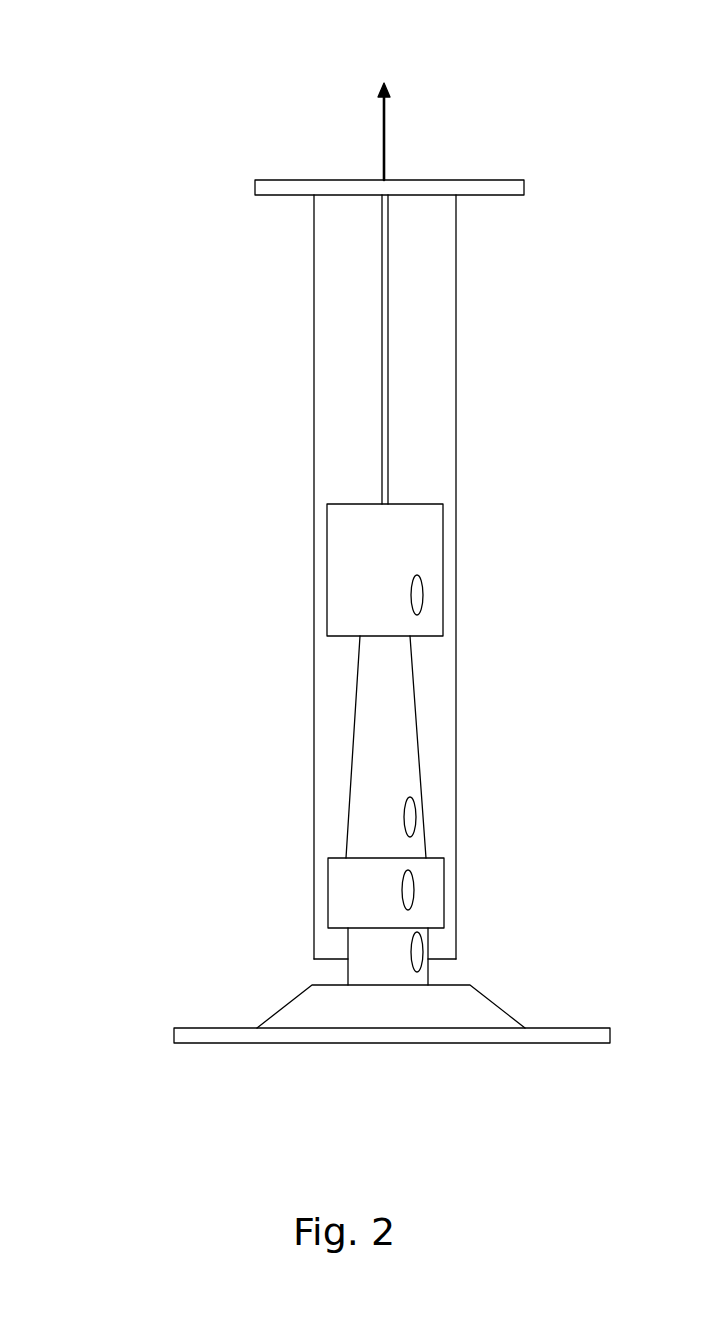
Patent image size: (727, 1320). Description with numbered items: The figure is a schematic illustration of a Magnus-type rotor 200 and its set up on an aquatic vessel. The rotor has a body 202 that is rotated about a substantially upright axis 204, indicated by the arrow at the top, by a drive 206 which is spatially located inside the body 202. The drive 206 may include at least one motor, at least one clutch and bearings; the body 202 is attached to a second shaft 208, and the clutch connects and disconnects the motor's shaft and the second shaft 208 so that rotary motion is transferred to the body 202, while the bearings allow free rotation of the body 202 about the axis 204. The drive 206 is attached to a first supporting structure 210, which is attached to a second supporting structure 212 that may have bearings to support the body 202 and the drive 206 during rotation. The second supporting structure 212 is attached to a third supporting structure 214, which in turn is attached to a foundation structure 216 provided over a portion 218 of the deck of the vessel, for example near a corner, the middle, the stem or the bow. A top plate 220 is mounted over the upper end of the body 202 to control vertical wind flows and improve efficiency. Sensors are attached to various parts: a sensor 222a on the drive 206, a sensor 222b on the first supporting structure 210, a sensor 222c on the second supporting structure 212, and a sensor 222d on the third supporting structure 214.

The Magnus-type rotor 200 is at (172, 202).
The body 202 is at (314, 357).
The substantially upright axis 204 is at (386, 133).
The drive 206 is at (337, 572).
The second shaft 208 is at (388, 358).
The first supporting structure 210 is at (363, 707).
The second supporting structure 212 is at (335, 883).
The third supporting structure 214 is at (353, 968).
The foundation structure 216 is at (490, 1003).
The portion of a deck 218 is at (203, 1043).
The top plate 220 is at (513, 180).
The sensor 222a is at (423, 597).
The sensor 222b is at (415, 803).
The sensor 222c is at (415, 878).
The sensor 222d is at (420, 942).